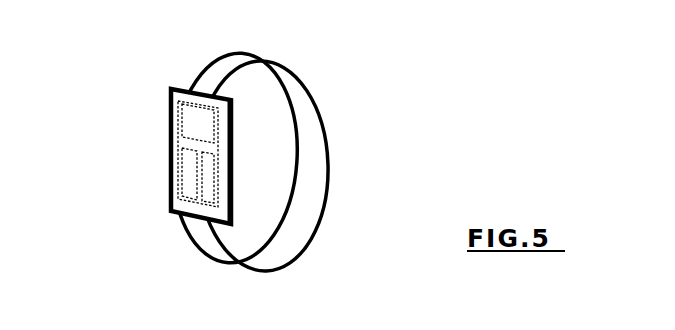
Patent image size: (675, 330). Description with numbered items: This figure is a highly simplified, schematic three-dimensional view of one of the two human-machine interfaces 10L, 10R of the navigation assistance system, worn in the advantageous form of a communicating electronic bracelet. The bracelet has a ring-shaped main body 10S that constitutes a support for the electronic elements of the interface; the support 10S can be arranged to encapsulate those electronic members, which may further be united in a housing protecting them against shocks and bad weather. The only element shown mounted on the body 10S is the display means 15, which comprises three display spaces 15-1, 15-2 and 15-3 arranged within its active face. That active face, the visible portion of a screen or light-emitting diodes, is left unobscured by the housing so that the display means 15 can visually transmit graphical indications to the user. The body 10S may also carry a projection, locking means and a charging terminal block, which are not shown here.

The human-machine interface 10L is at (263, 142).
The human-machine interface 10R is at (263, 142).
The main body 10S is at (309, 148).
The display means 15 is at (237, 137).
The display space 15-1 is at (130, 162).
The display space 15-2 is at (306, 207).
The display space 15-3 is at (259, 77).